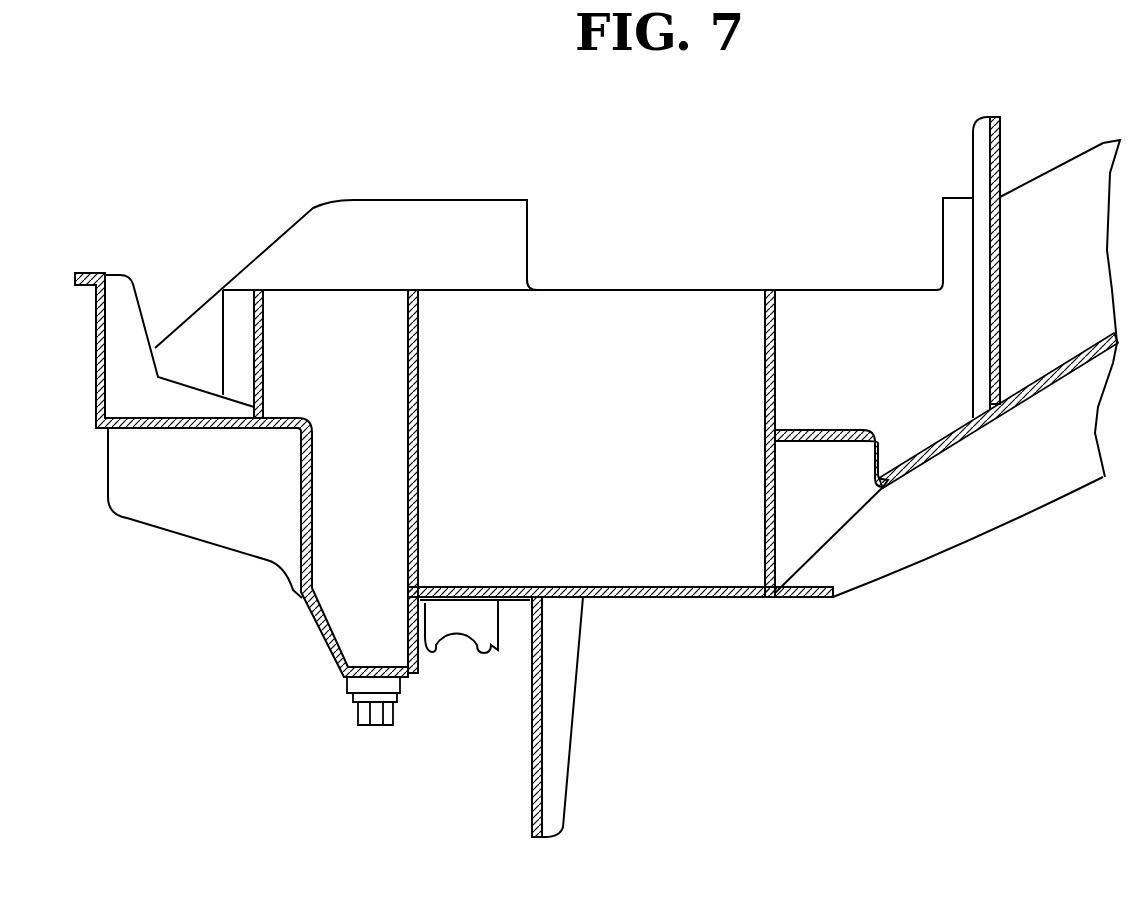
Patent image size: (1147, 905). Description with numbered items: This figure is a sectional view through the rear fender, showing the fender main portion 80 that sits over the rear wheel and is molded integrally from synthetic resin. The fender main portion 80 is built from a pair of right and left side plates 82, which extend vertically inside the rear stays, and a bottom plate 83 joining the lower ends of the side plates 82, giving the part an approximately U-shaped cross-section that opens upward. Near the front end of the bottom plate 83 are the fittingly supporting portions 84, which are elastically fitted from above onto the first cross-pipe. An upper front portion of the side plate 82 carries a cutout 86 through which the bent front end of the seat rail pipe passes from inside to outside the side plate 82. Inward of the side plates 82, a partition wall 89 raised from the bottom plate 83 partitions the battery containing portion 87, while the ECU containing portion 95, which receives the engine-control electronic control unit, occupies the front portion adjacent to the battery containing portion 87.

The fender main portion 80 is at (798, 597).
The side plate 82 is at (450, 208).
The bottom plate 83 is at (617, 600).
The fittingly supporting portion 84 is at (488, 647).
The cutout 86 is at (940, 247).
The battery containing portion 87 is at (600, 473).
The partition wall 89 is at (765, 405).
The ECU containing portion 95 is at (370, 416).